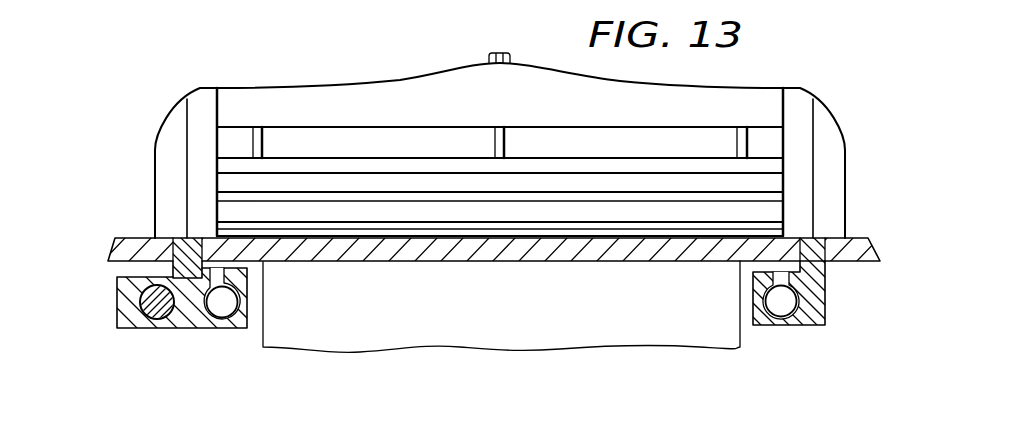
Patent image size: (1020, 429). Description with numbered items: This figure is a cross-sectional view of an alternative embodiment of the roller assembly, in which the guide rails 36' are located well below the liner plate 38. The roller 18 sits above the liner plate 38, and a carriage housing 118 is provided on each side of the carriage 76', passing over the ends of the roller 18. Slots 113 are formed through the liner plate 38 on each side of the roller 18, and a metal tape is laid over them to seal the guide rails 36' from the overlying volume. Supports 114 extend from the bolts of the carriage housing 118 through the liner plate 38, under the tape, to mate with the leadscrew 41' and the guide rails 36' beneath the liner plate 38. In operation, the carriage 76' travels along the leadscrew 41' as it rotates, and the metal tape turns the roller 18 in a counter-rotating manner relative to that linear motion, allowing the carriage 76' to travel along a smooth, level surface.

The carriage 76' is at (500, 58).
The carriage housing 118 is at (165, 130).
The slots 113 is at (172, 238).
The roller 18 is at (603, 208).
The liner plate 38 is at (526, 262).
The supports 114 is at (132, 330).
The guide rails 36' is at (485, 325).
The leadscrew 41' is at (137, 297).